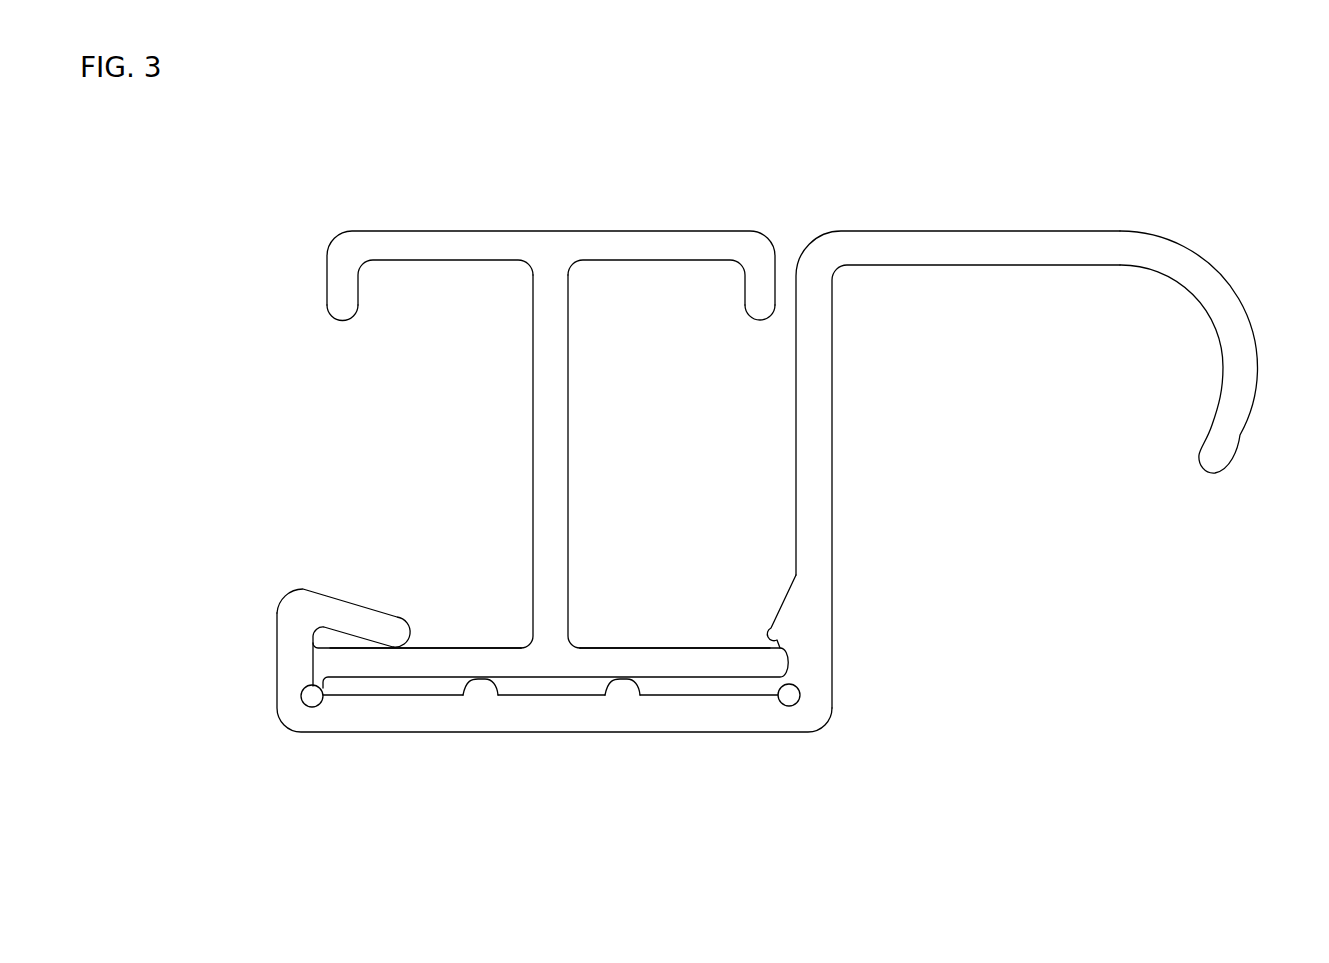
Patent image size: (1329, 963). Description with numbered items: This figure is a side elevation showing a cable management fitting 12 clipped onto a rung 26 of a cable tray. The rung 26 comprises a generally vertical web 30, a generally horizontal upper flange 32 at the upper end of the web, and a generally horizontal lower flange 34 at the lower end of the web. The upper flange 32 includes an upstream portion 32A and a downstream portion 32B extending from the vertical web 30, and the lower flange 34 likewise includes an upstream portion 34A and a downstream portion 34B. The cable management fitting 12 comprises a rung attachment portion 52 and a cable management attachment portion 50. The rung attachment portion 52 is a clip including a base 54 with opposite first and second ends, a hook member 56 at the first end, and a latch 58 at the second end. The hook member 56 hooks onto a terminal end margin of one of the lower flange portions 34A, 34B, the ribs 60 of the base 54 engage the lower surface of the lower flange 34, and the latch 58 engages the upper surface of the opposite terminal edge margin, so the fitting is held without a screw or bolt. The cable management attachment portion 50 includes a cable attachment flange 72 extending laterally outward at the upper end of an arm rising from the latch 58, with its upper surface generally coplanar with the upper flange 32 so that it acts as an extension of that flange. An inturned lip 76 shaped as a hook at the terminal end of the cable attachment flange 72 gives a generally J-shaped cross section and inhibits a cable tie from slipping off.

The cable management fitting 12 is at (868, 607).
The rung 26 is at (673, 210).
The upper flange 32 is at (433, 230).
The upstream portion of upper flange 32A is at (447, 260).
The downstream portion of upper flange 32B is at (657, 260).
The vertical web 30 is at (532, 457).
The lower flange 34 is at (563, 680).
The upstream portion of lower flange 34A is at (458, 655).
The downstream portion of lower flange 34B is at (667, 658).
The cable management attachment portion 50 is at (1052, 228).
The cable attachment flange 72 is at (960, 250).
The inturned lip 76 is at (1237, 425).
The rung attachment portion 52 is at (438, 737).
The base 54 is at (528, 720).
The hook member 56 is at (288, 620).
The latch 58 is at (770, 632).
The ribs 60 is at (463, 689).